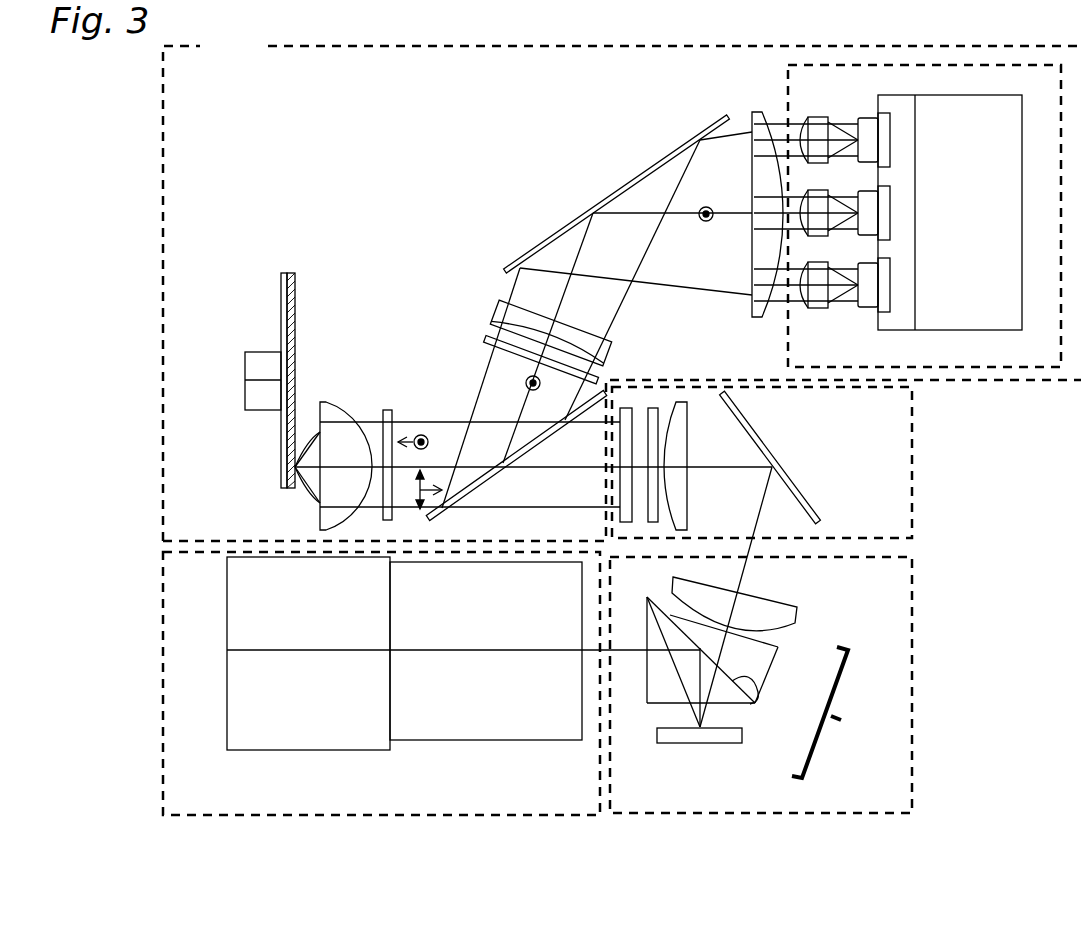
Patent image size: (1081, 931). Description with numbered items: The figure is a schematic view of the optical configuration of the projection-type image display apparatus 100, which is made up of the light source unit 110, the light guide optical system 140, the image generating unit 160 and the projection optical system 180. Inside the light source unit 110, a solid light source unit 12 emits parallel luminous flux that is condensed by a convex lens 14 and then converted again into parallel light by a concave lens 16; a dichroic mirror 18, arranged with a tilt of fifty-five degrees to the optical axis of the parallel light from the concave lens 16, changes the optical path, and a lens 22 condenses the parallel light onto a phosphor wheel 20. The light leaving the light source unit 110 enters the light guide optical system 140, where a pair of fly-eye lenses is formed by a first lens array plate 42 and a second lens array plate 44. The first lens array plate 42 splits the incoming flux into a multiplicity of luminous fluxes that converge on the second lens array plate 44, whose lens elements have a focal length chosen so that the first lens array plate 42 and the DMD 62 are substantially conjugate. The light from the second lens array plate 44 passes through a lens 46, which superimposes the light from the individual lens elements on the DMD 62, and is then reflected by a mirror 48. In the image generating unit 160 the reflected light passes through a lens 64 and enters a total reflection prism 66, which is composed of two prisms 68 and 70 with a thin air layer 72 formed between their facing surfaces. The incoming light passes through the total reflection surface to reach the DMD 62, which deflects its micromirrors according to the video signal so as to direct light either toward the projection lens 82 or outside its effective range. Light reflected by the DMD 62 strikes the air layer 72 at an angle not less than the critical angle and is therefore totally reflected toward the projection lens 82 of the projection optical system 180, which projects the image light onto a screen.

The projection-type image display apparatus 100 is at (1043, 709).
The light source unit 110 is at (622, 285).
The solid light source unit 12 is at (912, 216).
The convex lens 14 is at (760, 150).
The concave lens 16 is at (500, 314).
The dichroic mirror 18 is at (467, 484).
The phosphor wheel 20 is at (278, 302).
The lens 22 is at (333, 417).
The first lens array plate 42 is at (624, 408).
The second lens array plate 44 is at (652, 408).
The lens 46 is at (676, 455).
The mirror 48 is at (762, 447).
The light guide optical system 140 is at (772, 462).
The image generating unit 160 is at (772, 685).
The DMD 62 is at (716, 744).
The lens 64 is at (790, 613).
The total reflection prism 66 is at (836, 712).
The prism 68 is at (762, 670).
The prism 70 is at (752, 706).
The air layer 72 is at (747, 695).
The projection optical system 180 is at (370, 683).
The projection lens 82 is at (430, 725).